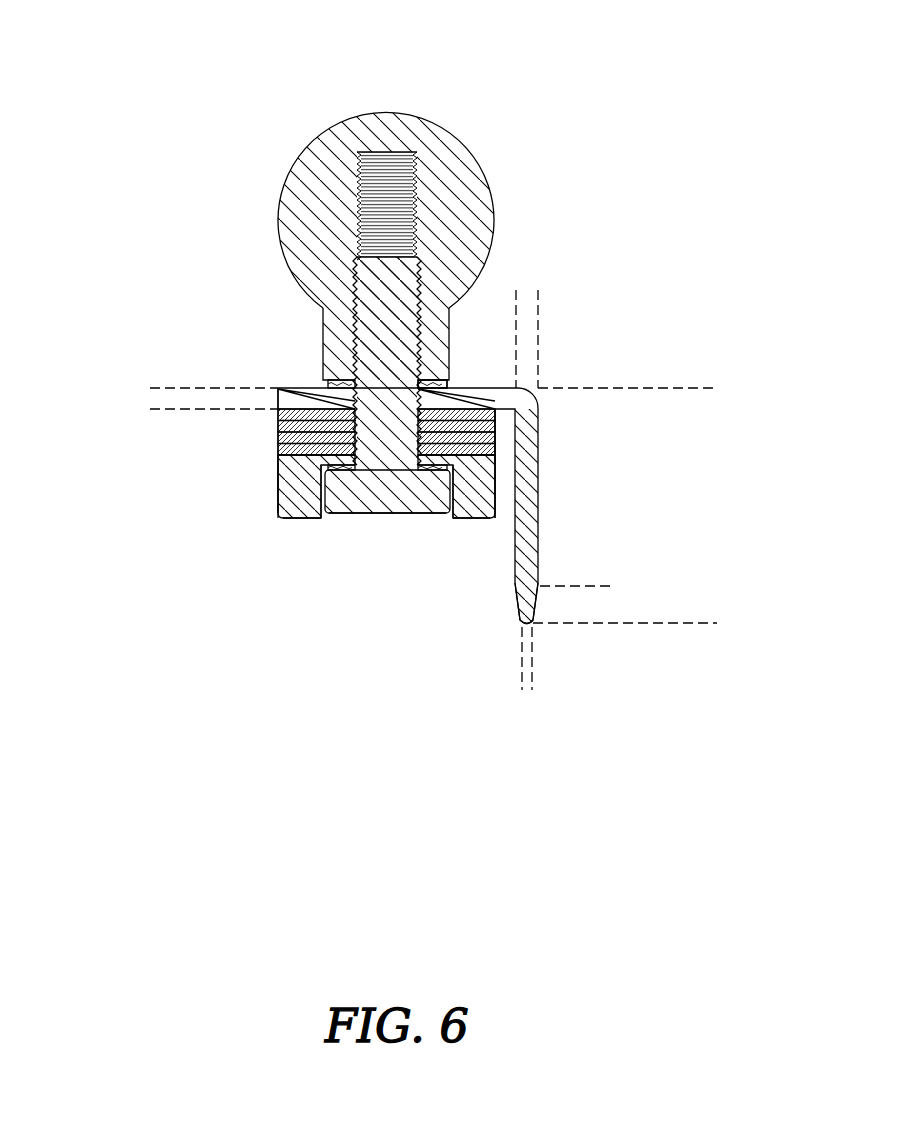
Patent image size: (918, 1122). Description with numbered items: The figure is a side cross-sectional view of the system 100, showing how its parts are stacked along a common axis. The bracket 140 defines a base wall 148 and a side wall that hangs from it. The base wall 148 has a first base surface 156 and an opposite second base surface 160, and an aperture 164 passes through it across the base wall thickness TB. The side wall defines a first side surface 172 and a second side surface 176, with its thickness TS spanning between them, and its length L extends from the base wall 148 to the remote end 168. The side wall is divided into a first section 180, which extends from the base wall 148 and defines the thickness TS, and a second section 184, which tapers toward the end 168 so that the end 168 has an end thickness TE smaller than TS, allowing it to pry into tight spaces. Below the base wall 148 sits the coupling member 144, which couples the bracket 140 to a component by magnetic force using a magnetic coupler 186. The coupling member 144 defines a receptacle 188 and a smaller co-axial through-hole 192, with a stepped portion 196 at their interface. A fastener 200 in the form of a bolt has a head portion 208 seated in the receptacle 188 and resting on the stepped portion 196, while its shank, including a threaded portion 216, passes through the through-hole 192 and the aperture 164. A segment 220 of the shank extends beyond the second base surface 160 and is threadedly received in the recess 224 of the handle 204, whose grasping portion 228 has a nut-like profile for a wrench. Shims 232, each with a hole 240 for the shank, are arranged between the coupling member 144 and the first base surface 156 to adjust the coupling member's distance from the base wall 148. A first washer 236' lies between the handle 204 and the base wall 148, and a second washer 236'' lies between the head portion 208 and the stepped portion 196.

The system 100 is at (363, 348).
The handle 204 is at (473, 153).
The recess 224 is at (367, 205).
The segment 220 is at (357, 287).
The threaded portion 216 is at (425, 283).
The grasping portion 228 is at (323, 350).
The base wall 148 is at (305, 387).
The aperture 164 is at (415, 385).
The first washer 236' is at (524, 349).
The second washer 236'' is at (417, 521).
The first base surface 156 is at (518, 396).
The second side surface 176 is at (538, 445).
The end 168 is at (527, 627).
The first side surface 172 is at (503, 515).
The second base surface 160 is at (303, 387).
The bracket 140 is at (278, 398).
The shims 232 is at (278, 450).
The hole 240 is at (278, 453).
The coupling member 144 is at (278, 475).
The magnetic coupler 186 is at (278, 498).
The receptacle 188 is at (330, 518).
The head portion 208 is at (365, 518).
The stepped portion 196 is at (352, 460).
The through-hole 192 is at (405, 510).
The fastener 200 is at (347, 518).
The first section 180 is at (610, 388).
The second section 184 is at (634, 586).
The thickness of the base wall TB is at (150, 419).
The thickness of the side wall TS is at (480, 293).
The end thickness TE is at (480, 697).
The length of the side wall L is at (708, 388).